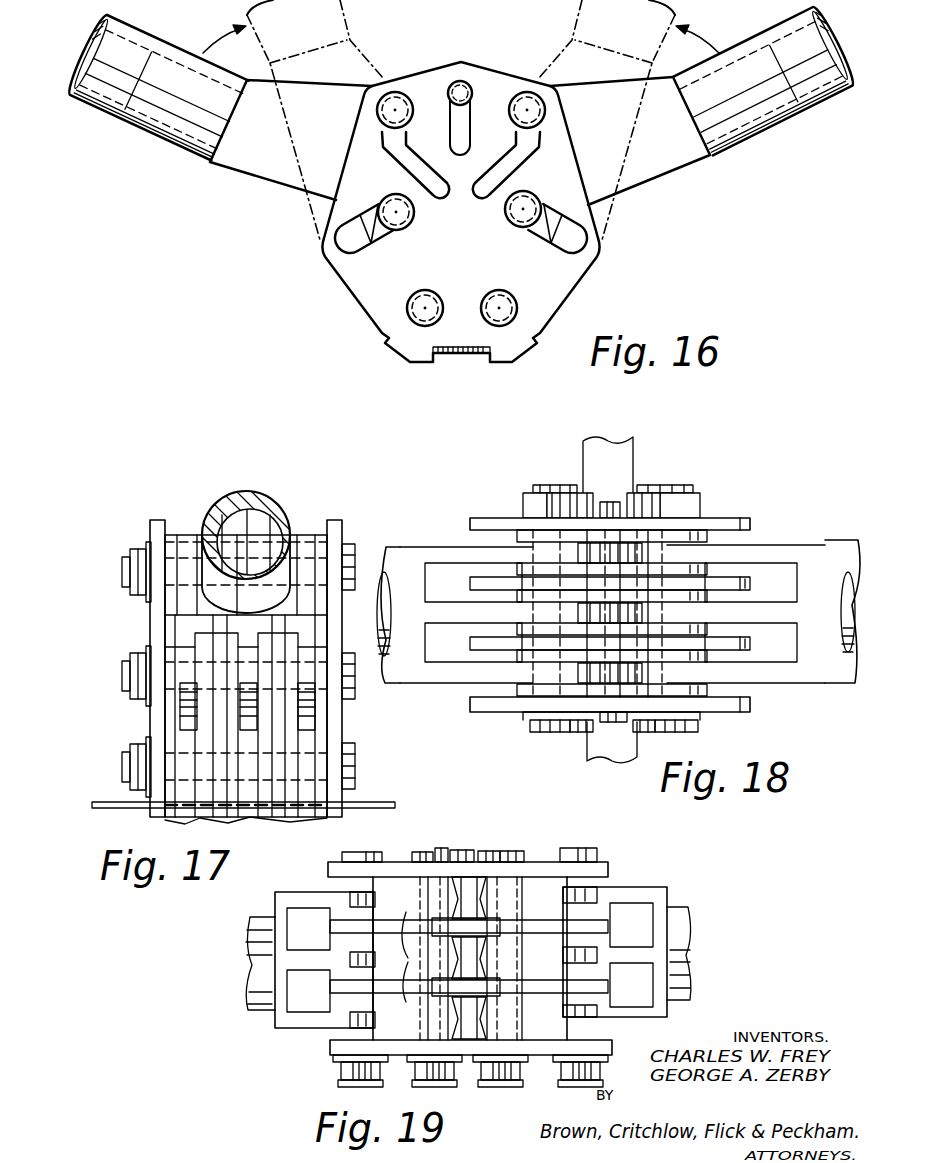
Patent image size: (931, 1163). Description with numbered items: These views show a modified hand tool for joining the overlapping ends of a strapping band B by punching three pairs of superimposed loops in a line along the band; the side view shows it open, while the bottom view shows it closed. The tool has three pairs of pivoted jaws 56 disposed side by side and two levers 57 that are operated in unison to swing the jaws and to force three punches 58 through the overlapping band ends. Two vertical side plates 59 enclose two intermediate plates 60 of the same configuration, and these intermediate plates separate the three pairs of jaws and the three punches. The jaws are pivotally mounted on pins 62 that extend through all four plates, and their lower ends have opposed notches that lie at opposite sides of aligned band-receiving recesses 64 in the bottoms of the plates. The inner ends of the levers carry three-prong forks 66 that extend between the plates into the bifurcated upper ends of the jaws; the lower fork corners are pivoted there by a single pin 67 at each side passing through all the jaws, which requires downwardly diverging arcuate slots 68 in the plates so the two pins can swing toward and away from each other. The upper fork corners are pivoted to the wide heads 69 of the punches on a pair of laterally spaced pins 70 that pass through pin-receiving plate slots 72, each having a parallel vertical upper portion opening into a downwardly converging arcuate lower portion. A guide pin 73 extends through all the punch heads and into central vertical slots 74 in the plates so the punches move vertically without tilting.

In FIG. 16, the pivoted jaws 56 is at (390, 348).
In FIG. 17, the pivoted jaws 56 is at (244, 824).
In FIG. 18, the pivoted jaws 56 is at (597, 613).
In FIG. 19, the pivoted jaws 56 is at (470, 958).
In FIG. 16, the levers 57 is at (150, 130).
In FIG. 17, the levers 57 is at (230, 498).
In FIG. 18, the levers 57 is at (396, 532).
In FIG. 19, the levers 57 is at (256, 953).
In FIG. 19, the punches 58 is at (470, 899).
In FIG. 16, the vertical side plates 59 is at (340, 258).
In FIG. 17, the vertical side plates 59 is at (156, 520).
In FIG. 18, the vertical side plates 59 is at (730, 518).
In FIG. 19, the vertical side plates 59 is at (330, 872).
In FIG. 17, the intermediate plates 60 is at (274, 749).
In FIG. 18, the intermediate plates 60 is at (752, 584).
In FIG. 19, the intermediate plates 60 is at (332, 933).
In FIG. 16, the pins 62 is at (489, 299).
In FIG. 17, the pins 62 is at (122, 770).
In FIG. 18, the pins 62 is at (584, 735).
In FIG. 19, the pins 62 is at (434, 856).
In FIG. 16, the band-receiving recesses 64 is at (476, 365).
In FIG. 16, the three-prong forks 66 is at (262, 178).
In FIG. 17, the three-prong forks 66 is at (312, 642).
In FIG. 18, the three-prong forks 66 is at (444, 552).
In FIG. 19, the three-prong forks 66 is at (278, 903).
In FIG. 16, the pin 67 is at (410, 221).
In FIG. 17, the pin 67 is at (122, 679).
In FIG. 19, the pin 67 is at (360, 857).
In FIG. 16, the downwardly diverging arcuate slots 68 is at (358, 252).
In FIG. 16, the wide heads 69 is at (398, 145).
In FIG. 18, the wide heads 69 is at (524, 574).
In FIG. 16, the laterally spaced pins 70 is at (380, 110).
In FIG. 17, the laterally spaced pins 70 is at (122, 577).
In FIG. 18, the laterally spaced pins 70 is at (536, 733).
In FIG. 19, the laterally spaced pins 70 is at (456, 857).
In FIG. 16, the plate slots 72 is at (407, 161).
In FIG. 16, the guide pin 73 is at (462, 81).
In FIG. 17, the guide pin 73 is at (350, 552).
In FIG. 18, the guide pin 73 is at (614, 737).
In FIG. 19, the guide pin 73 is at (476, 853).
In FIG. 16, the central vertical slots 74 is at (452, 125).
In FIG. 16, the strapping band B is at (461, 356).
In FIG. 17, the strapping band B is at (122, 819).
In FIG. 18, the strapping band B is at (638, 466).